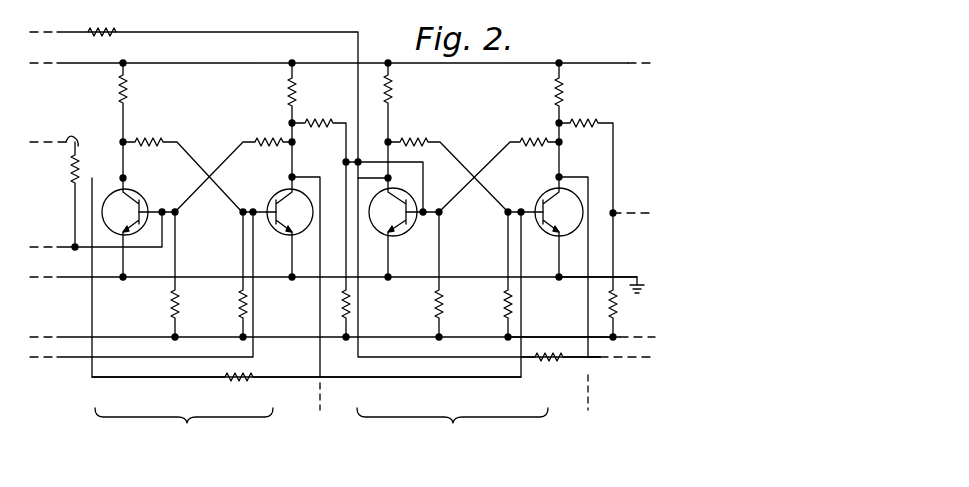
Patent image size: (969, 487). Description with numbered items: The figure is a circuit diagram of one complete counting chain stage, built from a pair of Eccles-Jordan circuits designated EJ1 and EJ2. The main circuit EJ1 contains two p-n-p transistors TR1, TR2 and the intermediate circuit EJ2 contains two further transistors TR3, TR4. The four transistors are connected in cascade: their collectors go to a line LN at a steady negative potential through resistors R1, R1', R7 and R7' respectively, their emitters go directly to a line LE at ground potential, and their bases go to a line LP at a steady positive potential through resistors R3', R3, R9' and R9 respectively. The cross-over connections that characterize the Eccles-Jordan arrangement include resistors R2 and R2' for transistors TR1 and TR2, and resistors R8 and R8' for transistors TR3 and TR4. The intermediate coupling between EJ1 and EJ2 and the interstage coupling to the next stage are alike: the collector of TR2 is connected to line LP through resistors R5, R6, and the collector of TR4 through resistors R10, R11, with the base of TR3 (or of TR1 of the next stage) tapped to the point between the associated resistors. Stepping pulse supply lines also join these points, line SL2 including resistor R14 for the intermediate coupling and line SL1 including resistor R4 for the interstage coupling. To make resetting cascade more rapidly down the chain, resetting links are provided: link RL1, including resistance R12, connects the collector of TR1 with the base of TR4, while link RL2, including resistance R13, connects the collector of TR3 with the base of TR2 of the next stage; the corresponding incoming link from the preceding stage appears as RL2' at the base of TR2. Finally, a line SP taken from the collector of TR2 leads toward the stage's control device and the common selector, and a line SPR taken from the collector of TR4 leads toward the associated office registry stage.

The stepping pulse supply line SL2 is at (342, 184).
The line at steady negative potential LN is at (342, 53).
The resistor R14 is at (102, 45).
The resistor R1 is at (107, 102).
The resistor R2 is at (181, 163).
The resistor R4 is at (59, 194).
The stepping pulse supply line SL1 is at (69, 148).
The transistor TR1 is at (134, 195).
The transistor TR2 is at (272, 197).
The transistor TR3 is at (418, 241).
The transistor TR4 is at (544, 197).
The resistor R3' is at (160, 274).
The resistor R3 is at (226, 274).
The resistor R1' is at (276, 102).
The resistor R2' is at (235, 163).
The resistor R5 is at (319, 128).
The resistor R6 is at (336, 249).
The resistor R7 is at (402, 102).
The resistor R7' is at (576, 102).
The resistor R8 is at (446, 162).
The resistor R8' is at (500, 162).
The resistor R9 is at (491, 274).
The resistor R9' is at (423, 274).
The resistor R10 is at (586, 166).
The resistor R11 is at (630, 275).
The resistance R12 is at (206, 390).
The resistance R13 is at (560, 370).
The line at ground potential LE is at (580, 277).
The line at steady positive potential LP is at (572, 337).
The line SP is at (320, 362).
The line SPR is at (590, 380).
The resetting link RL1 is at (404, 380).
The resetting link RL2 is at (612, 372).
The resetting link RL2' is at (141, 296).
The Eccles-Jordan circuit EJ1 is at (184, 430).
The Eccles-Jordan circuit EJ2 is at (452, 430).